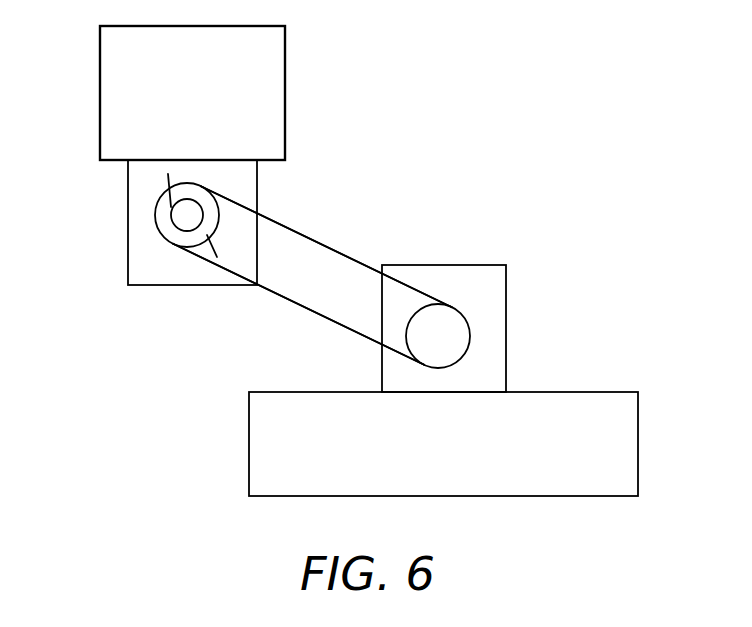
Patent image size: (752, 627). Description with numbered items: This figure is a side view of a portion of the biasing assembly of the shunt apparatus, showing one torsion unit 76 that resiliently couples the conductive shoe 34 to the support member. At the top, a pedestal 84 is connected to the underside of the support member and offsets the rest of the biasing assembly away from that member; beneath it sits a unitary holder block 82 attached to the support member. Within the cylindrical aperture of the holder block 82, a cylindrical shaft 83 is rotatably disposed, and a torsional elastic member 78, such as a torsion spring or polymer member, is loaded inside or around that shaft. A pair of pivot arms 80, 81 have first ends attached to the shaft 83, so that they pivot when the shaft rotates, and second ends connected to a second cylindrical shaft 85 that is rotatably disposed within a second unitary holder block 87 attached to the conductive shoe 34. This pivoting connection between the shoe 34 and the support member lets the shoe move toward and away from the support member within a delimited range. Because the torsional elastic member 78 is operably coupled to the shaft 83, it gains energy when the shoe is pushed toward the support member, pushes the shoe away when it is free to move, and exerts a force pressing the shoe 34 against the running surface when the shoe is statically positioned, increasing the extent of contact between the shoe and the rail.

The conductive shoe 34 is at (577, 392).
The torsion unit 76 is at (457, 108).
The torsional elastic member 78 is at (172, 220).
The pivot arm 80 is at (328, 245).
The pivot arm 81 is at (312, 275).
The unitary holder block 82 is at (128, 190).
The cylindrical shaft 83 is at (203, 188).
The pedestal 84 is at (100, 94).
The second cylindrical shaft 85 is at (458, 328).
The second unitary holder block 87 is at (472, 264).